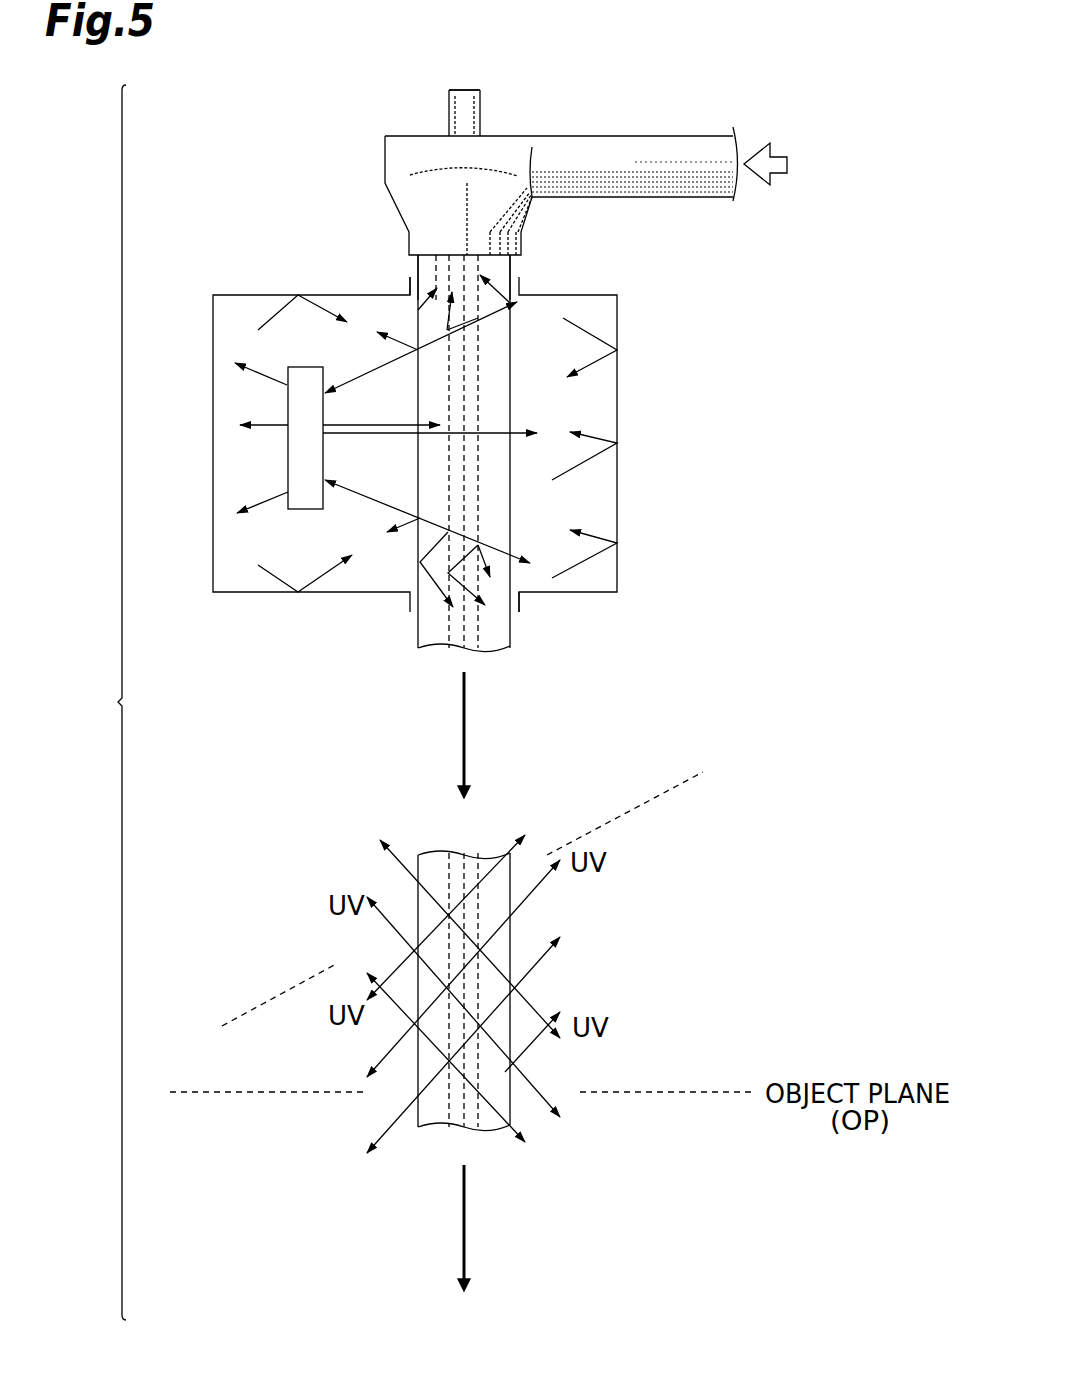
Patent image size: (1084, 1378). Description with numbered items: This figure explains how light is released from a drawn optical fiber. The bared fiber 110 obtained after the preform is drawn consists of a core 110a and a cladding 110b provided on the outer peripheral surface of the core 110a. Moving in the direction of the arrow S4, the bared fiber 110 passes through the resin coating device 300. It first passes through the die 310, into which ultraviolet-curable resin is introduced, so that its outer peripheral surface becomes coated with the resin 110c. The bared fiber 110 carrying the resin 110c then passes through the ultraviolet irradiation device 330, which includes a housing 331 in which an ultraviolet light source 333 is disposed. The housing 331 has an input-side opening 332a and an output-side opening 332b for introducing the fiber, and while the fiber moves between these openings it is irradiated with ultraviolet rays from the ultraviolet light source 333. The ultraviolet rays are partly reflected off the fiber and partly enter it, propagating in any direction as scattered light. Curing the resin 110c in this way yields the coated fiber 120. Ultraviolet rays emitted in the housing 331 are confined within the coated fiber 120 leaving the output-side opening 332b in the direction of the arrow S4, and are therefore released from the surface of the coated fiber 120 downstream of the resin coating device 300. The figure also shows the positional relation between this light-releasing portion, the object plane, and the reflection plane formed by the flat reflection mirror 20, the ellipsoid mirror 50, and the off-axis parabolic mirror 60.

The bared fiber 110 is at (501, 174).
The core 110a is at (474, 88).
The cladding 110b is at (449, 112).
The resin 110c is at (510, 270).
The coated fiber 120 is at (497, 645).
The resin coating device 300 is at (865, 121).
The die 310 is at (368, 172).
The ultraviolet irradiation device 330 is at (443, 446).
The housing 331 is at (619, 503).
The input-side opening 332a is at (412, 270).
The output-side opening 332b is at (518, 622).
The ultraviolet light source 333 is at (299, 460).
The arrow S4 is at (457, 727).
The flat reflection mirror 20 is at (591, 889).
The ellipsoid mirror 50 is at (591, 889).
The off-axis parabolic mirror 60 is at (591, 889).